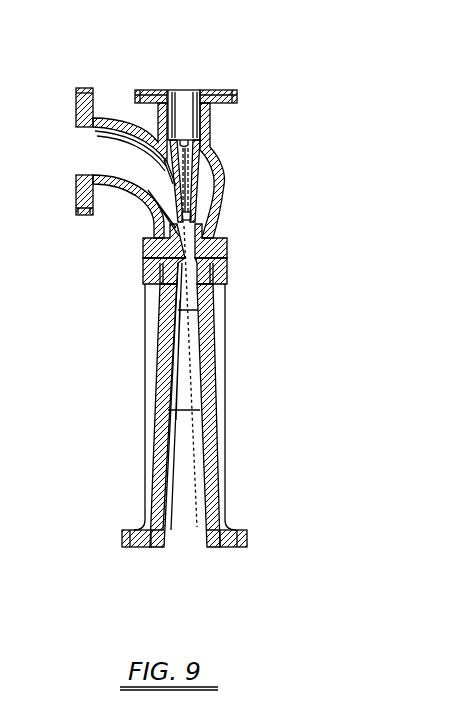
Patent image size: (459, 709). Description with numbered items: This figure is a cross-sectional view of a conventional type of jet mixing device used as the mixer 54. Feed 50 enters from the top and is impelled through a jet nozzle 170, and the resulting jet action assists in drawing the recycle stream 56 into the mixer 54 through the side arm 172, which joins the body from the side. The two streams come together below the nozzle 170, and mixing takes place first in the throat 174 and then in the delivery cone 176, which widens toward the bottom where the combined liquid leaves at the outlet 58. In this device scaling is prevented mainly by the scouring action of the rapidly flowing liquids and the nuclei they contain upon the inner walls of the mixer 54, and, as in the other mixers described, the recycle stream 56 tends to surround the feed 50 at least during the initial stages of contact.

The feed 50 is at (185, 112).
The mixer 54 is at (216, 378).
The recycle stream 56 is at (104, 151).
The discharge outlet 58 is at (183, 508).
The jet nozzle 170 is at (186, 190).
The side arm 172 is at (134, 196).
The throat 174 is at (190, 259).
The delivery cone 176 is at (192, 445).